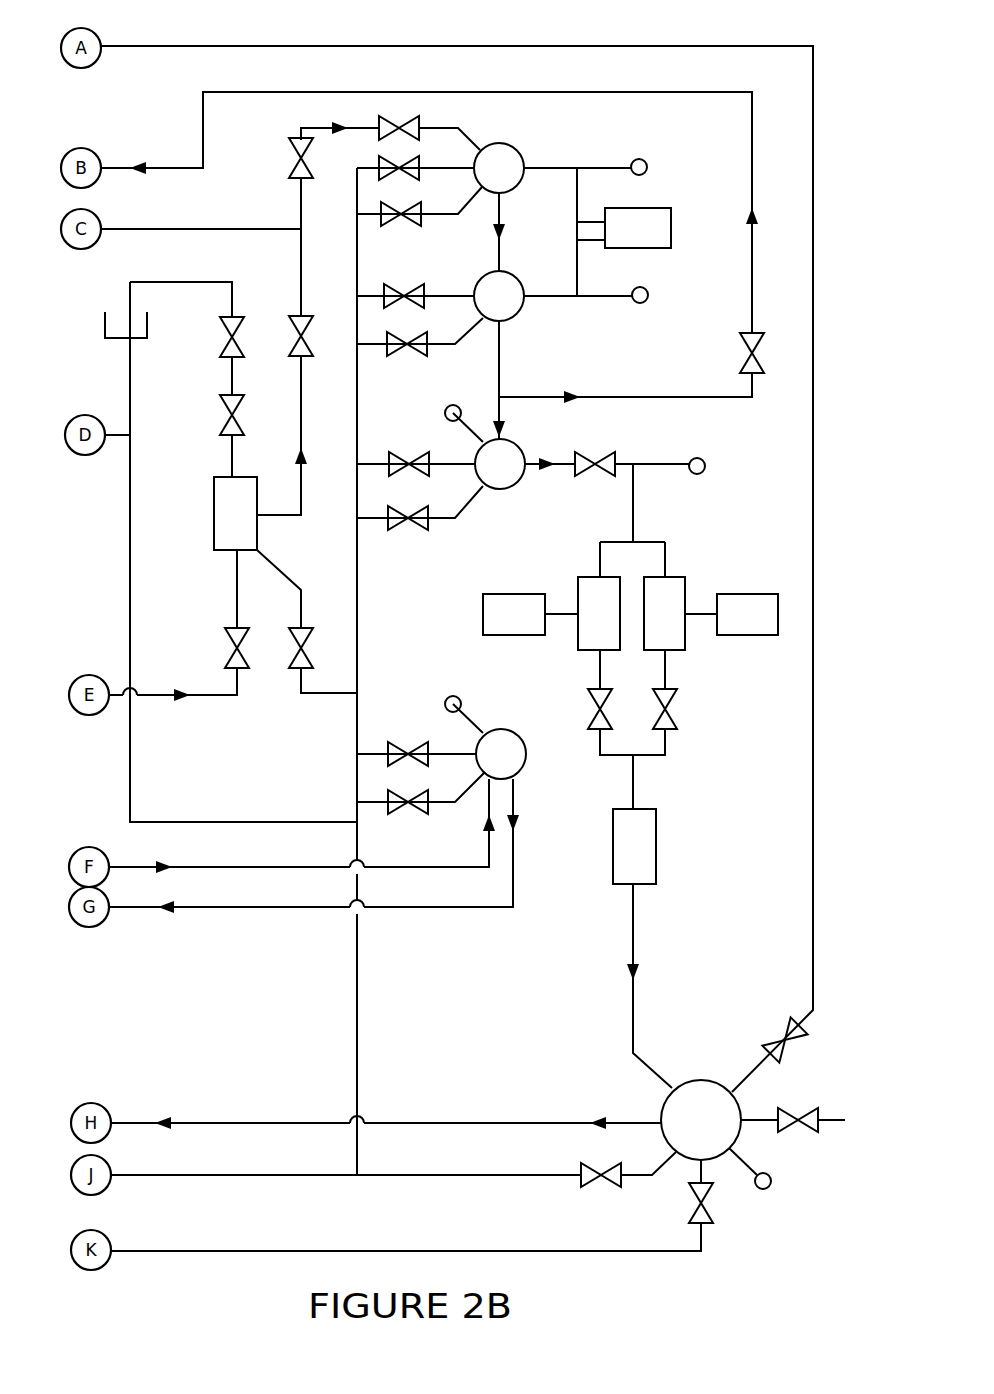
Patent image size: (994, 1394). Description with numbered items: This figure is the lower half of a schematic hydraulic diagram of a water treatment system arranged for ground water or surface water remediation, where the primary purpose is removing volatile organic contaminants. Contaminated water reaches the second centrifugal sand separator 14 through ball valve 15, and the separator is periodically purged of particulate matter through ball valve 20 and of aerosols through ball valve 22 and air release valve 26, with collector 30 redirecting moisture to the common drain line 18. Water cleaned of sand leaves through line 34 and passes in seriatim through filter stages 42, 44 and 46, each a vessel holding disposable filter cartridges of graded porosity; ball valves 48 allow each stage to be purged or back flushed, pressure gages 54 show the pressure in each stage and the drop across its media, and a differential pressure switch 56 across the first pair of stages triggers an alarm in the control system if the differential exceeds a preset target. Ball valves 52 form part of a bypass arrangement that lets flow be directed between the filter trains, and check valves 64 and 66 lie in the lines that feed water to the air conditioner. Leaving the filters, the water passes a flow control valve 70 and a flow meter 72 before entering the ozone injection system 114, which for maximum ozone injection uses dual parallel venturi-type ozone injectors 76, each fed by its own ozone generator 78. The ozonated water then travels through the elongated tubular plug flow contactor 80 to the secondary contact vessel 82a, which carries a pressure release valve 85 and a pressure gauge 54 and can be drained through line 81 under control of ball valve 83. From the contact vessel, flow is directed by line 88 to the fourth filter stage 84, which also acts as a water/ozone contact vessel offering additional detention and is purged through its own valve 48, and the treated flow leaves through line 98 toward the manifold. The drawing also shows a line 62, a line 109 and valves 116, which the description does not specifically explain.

The second centrifugal sand separator 14 is at (214, 505).
The ball valve 15 is at (225, 638).
The common drain line 18 is at (358, 627).
The ball valve 20 is at (312, 630).
The ball valve 22 is at (220, 405).
The air release valve 26 is at (220, 322).
The collector 30 is at (104, 323).
The line 34 is at (302, 208).
The filter stage 42 is at (516, 148).
The filter stage 44 is at (523, 310).
The filter stage 46 is at (522, 442).
The ball valve 48 is at (378, 160).
The ball valve 52 is at (292, 143).
The pressure gage 54 is at (645, 160).
The differential pressure switch 56 is at (652, 208).
The return line 62 is at (480, 92).
The check valve 64 is at (418, 125).
The check valve 66 is at (757, 336).
The flow control valve 70 is at (612, 452).
The flow meter 72 is at (700, 457).
The venturi-type ozone injector 76 is at (592, 577).
The ozone generator 78 is at (510, 594).
The plug-flow contact system 80 is at (656, 858).
The line 81 is at (416, 1175).
The secondary contact vessel 82a is at (694, 1080).
The ball valve 83 is at (585, 1162).
The fourth filter stage 84 is at (528, 710).
The pressure release valve 85 is at (785, 1107).
The line 88 is at (427, 1123).
The line 98 is at (413, 908).
The line 109 is at (563, 46).
The ozone injection system 114 is at (688, 656).
The valve 116 is at (588, 725).